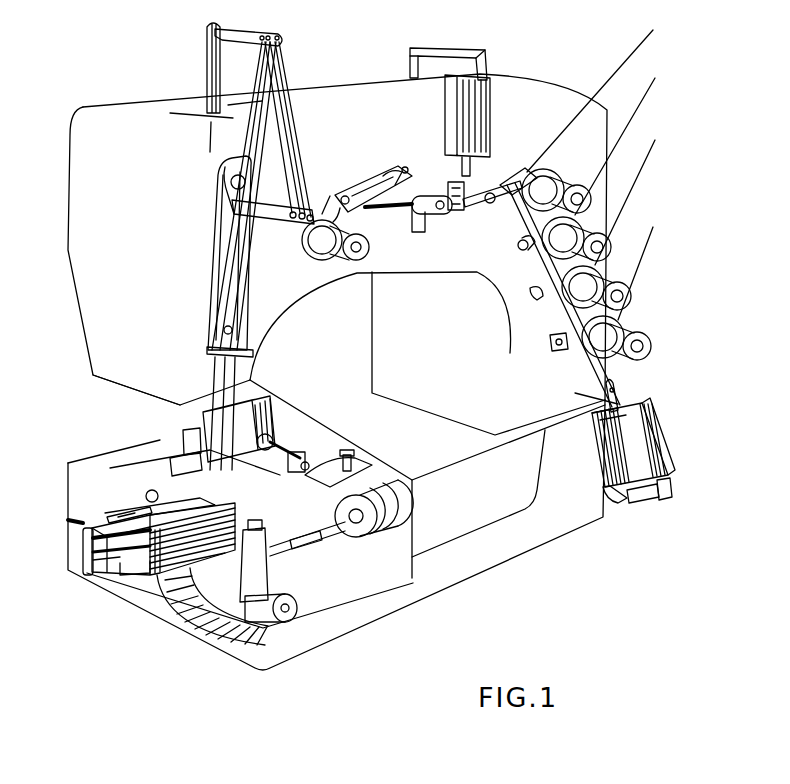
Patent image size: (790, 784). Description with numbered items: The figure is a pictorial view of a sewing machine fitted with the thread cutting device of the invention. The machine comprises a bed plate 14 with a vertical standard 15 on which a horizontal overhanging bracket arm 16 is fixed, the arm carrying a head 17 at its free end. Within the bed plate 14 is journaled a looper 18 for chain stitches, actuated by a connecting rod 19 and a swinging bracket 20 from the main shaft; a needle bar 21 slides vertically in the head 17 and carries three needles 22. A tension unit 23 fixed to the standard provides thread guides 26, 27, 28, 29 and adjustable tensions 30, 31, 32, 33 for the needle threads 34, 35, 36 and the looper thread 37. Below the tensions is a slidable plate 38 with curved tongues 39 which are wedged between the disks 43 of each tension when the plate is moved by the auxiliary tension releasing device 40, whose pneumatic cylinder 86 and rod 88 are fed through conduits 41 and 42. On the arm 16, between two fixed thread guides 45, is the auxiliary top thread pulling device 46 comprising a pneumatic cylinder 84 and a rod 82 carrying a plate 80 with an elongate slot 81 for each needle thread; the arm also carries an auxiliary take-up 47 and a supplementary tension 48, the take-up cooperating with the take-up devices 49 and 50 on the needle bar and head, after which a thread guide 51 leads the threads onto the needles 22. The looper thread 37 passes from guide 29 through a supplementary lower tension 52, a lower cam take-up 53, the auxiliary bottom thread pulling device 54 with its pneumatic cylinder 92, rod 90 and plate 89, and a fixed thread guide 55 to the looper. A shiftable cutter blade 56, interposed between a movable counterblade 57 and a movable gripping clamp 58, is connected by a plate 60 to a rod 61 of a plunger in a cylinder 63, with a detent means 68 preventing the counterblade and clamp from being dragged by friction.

The bed plate 14 is at (440, 587).
The vertical standard 15 is at (373, 325).
The overhanging bracket arm 16 is at (355, 84).
The head 17 is at (120, 373).
The looper 18 is at (327, 527).
The connecting rod 19 is at (313, 537).
The swinging bracket 20 is at (257, 583).
The needle bar 21 is at (212, 42).
The needles 22 is at (182, 460).
The tension unit 23 is at (518, 170).
The thread guide 26 is at (518, 173).
The thread guide 27 is at (518, 241).
The thread guide 28 is at (530, 294).
The thread guide 29 is at (550, 347).
The adjustable tension 30 is at (580, 186).
The adjustable tension 31 is at (609, 214).
The adjustable tension 32 is at (615, 276).
The adjustable tension 33 is at (627, 339).
The needle thread 34 is at (287, 143).
The needle thread 35 is at (287, 113).
The needle thread 36 is at (287, 80).
The looper thread 37 is at (465, 533).
The slidable plate 38 is at (613, 378).
The curved tongues 39 is at (603, 397).
The auxiliary tension releasing device 40 is at (640, 503).
The conduit 41 is at (483, 63).
The conduit 42 is at (410, 57).
The disks 43 is at (545, 170).
The thread guides 45 is at (490, 207).
The auxiliary top thread pulling device 46 is at (422, 106).
The auxiliary take-up 47 is at (337, 193).
The supplementary tension 48 is at (343, 270).
The take-up device 49 is at (280, 35).
The take-up device 50 is at (288, 222).
The thread guide 51 is at (257, 345).
The supplementary lower tension 52 is at (357, 460).
The lower cam take-up 53 is at (317, 467).
The auxiliary bottom thread pulling device 54 is at (260, 437).
The fixed thread guide 55 is at (297, 460).
The cutter blade 56 is at (100, 530).
The movable counterblade 57 is at (117, 517).
The movable gripping clamp 58 is at (207, 530).
The plate 60 is at (85, 560).
The rod 61 is at (100, 560).
The cylinder 63 is at (225, 543).
The detent means 68 is at (147, 492).
The plate 80 is at (470, 210).
The elongate slot 81 is at (449, 186).
The rod 82 is at (445, 163).
The pneumatic cylinder 84 is at (435, 121).
The pneumatic cylinder 86 is at (617, 461).
The rod 88 is at (617, 452).
The plate 89 is at (303, 463).
The rod 90 is at (285, 460).
The pneumatic cylinder 92 is at (233, 428).